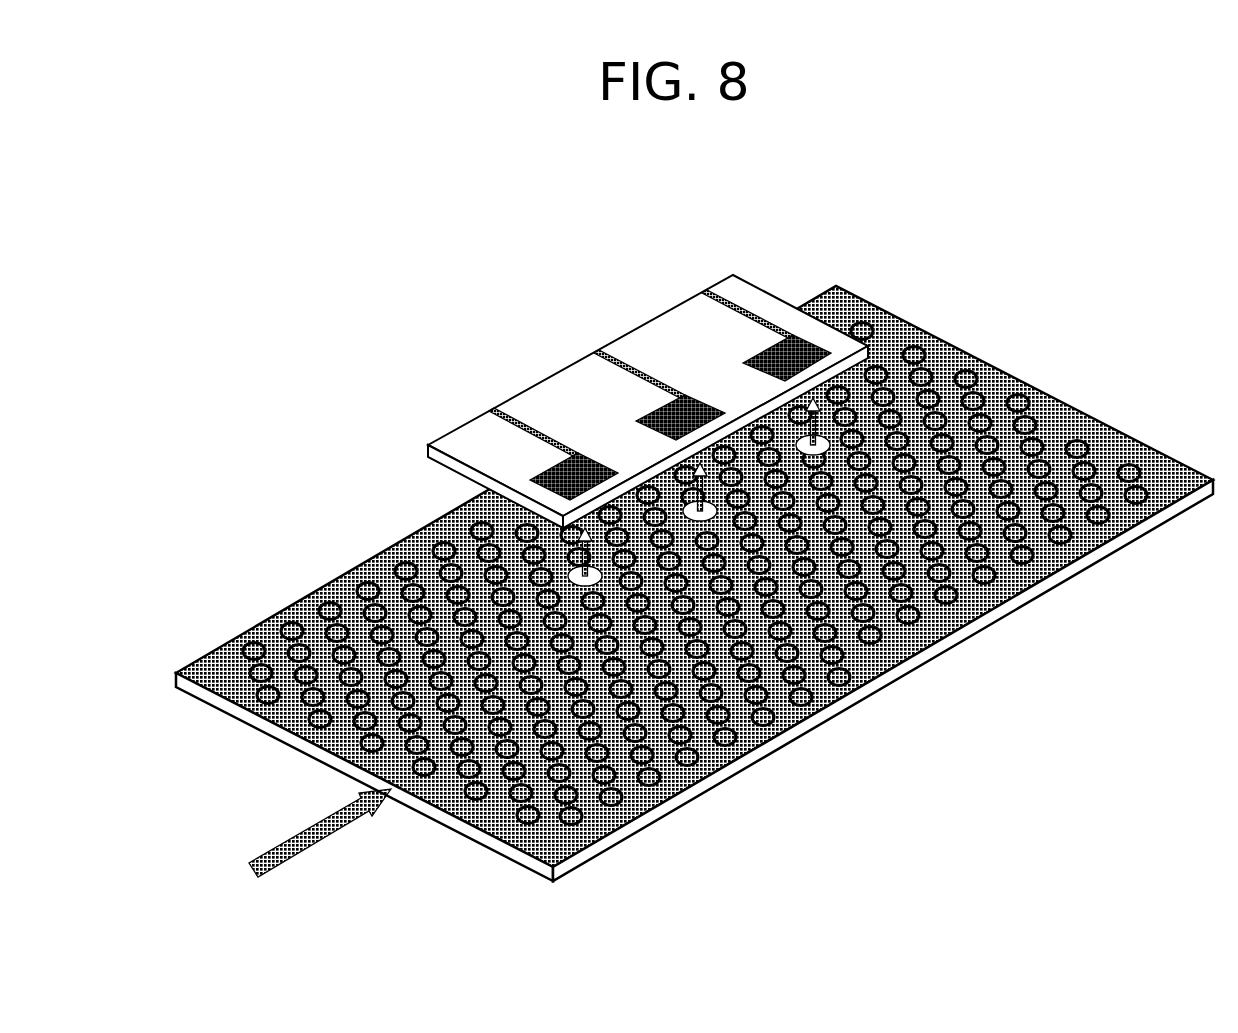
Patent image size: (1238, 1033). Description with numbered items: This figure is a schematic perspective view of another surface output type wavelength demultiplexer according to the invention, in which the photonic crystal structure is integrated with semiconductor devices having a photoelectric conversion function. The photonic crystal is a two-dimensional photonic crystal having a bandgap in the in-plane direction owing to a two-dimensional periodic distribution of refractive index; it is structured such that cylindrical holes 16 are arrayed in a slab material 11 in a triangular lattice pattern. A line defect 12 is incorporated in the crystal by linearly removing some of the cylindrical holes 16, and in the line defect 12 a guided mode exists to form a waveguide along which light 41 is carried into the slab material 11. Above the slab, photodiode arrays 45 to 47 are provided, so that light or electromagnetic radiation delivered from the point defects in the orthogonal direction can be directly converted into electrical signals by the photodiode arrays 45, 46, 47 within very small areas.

The slab material 11 is at (900, 663).
The line defect 12 is at (978, 422).
The cylindrical holes 16 is at (565, 810).
The incident light 41 is at (282, 830).
The photodiode array 45 is at (522, 472).
The photodiode array 46 is at (628, 413).
The photodiode array 47 is at (770, 342).